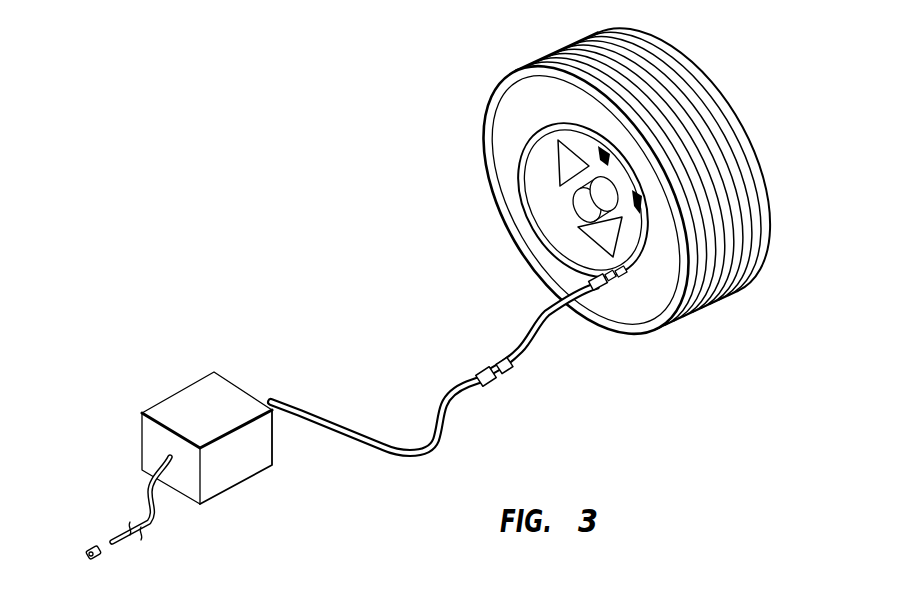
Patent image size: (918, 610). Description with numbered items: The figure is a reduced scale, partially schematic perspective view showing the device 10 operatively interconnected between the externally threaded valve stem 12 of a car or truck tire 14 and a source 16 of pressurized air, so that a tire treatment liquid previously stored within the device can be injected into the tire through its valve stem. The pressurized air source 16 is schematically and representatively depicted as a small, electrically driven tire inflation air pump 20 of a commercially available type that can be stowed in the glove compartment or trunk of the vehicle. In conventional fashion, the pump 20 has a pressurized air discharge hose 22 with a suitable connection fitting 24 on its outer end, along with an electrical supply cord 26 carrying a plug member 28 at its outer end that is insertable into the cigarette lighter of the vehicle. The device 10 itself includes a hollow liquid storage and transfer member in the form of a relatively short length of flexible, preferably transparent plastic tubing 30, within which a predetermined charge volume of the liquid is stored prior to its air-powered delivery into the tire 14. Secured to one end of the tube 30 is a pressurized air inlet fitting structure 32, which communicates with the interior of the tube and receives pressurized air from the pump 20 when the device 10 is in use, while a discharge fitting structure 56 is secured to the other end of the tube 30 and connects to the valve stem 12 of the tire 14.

The device 10 is at (533, 328).
The valve stem 12 is at (614, 284).
The tire 14 is at (746, 150).
The source of pressurized air 16 is at (152, 405).
The tire inflation air pump 20 is at (250, 474).
The pressurized air discharge hose 22 is at (348, 432).
The connection fitting 24 is at (484, 366).
The electrical supply cord 26 is at (142, 511).
The plug member 28 is at (97, 545).
The plastic tubing 30 is at (539, 337).
The pressurized air inlet fitting structure 32 is at (497, 385).
The discharge fitting structure 56 is at (606, 291).